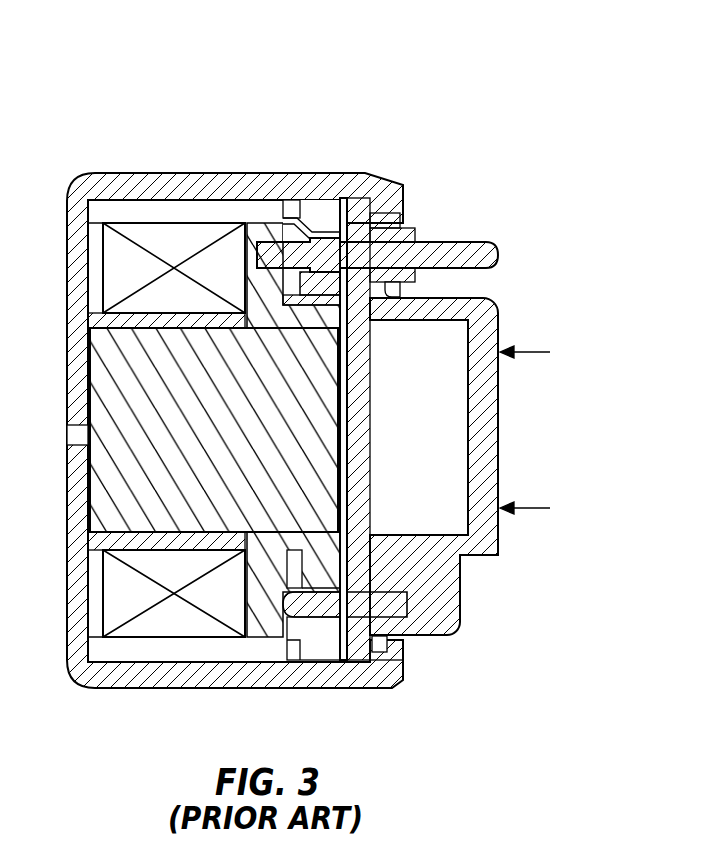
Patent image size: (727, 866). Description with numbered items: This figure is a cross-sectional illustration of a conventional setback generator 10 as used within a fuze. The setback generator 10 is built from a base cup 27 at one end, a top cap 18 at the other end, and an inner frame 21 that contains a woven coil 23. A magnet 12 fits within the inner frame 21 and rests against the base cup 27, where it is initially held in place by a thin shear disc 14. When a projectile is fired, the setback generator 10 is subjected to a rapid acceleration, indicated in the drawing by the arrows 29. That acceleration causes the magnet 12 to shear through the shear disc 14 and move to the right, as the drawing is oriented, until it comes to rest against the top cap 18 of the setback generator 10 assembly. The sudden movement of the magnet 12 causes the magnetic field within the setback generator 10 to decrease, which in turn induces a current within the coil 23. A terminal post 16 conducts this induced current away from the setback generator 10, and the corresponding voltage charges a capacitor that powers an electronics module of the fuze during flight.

The setback generator 10 is at (480, 98).
The magnet 12 is at (298, 387).
The shear disc 14 is at (347, 482).
The terminal post 16 is at (457, 242).
The top cap 18 is at (473, 298).
The inner frame 21 is at (112, 252).
The woven coil 23 is at (204, 235).
The base cup 27 is at (388, 690).
The arrows 29 is at (544, 431).